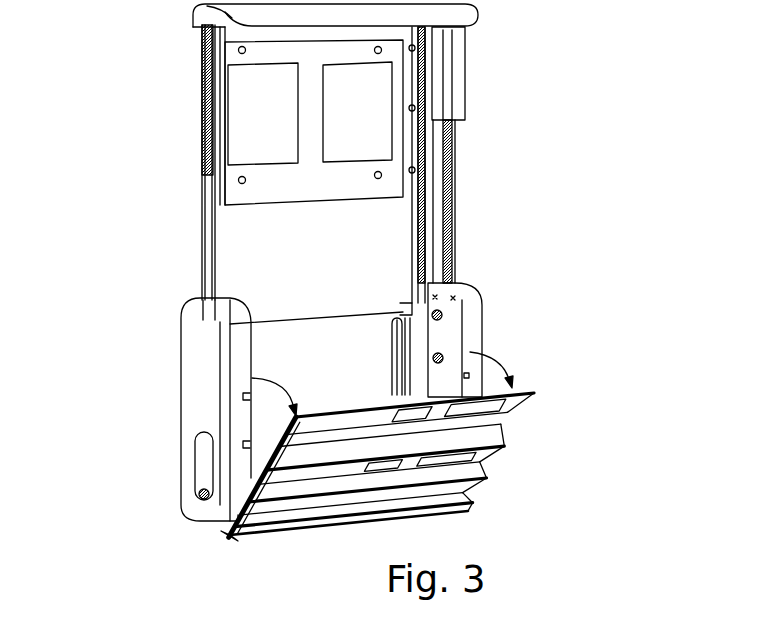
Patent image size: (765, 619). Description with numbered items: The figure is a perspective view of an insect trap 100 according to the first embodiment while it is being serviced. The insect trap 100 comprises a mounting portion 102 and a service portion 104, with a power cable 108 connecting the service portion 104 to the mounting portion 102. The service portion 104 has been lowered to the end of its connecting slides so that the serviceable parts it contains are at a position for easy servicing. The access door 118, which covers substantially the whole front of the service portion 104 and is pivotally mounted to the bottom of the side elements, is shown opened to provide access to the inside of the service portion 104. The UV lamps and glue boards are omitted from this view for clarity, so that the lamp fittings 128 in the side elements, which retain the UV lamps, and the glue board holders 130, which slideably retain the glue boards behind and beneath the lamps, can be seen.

The insect trap 100 is at (507, 100).
The mounting portion 102 is at (191, 79).
The service portion 104 is at (164, 379).
The power cable 108 is at (453, 186).
The access door 118 is at (513, 440).
The lamp fittings 128 is at (442, 352).
The glue board holders 130 is at (397, 347).